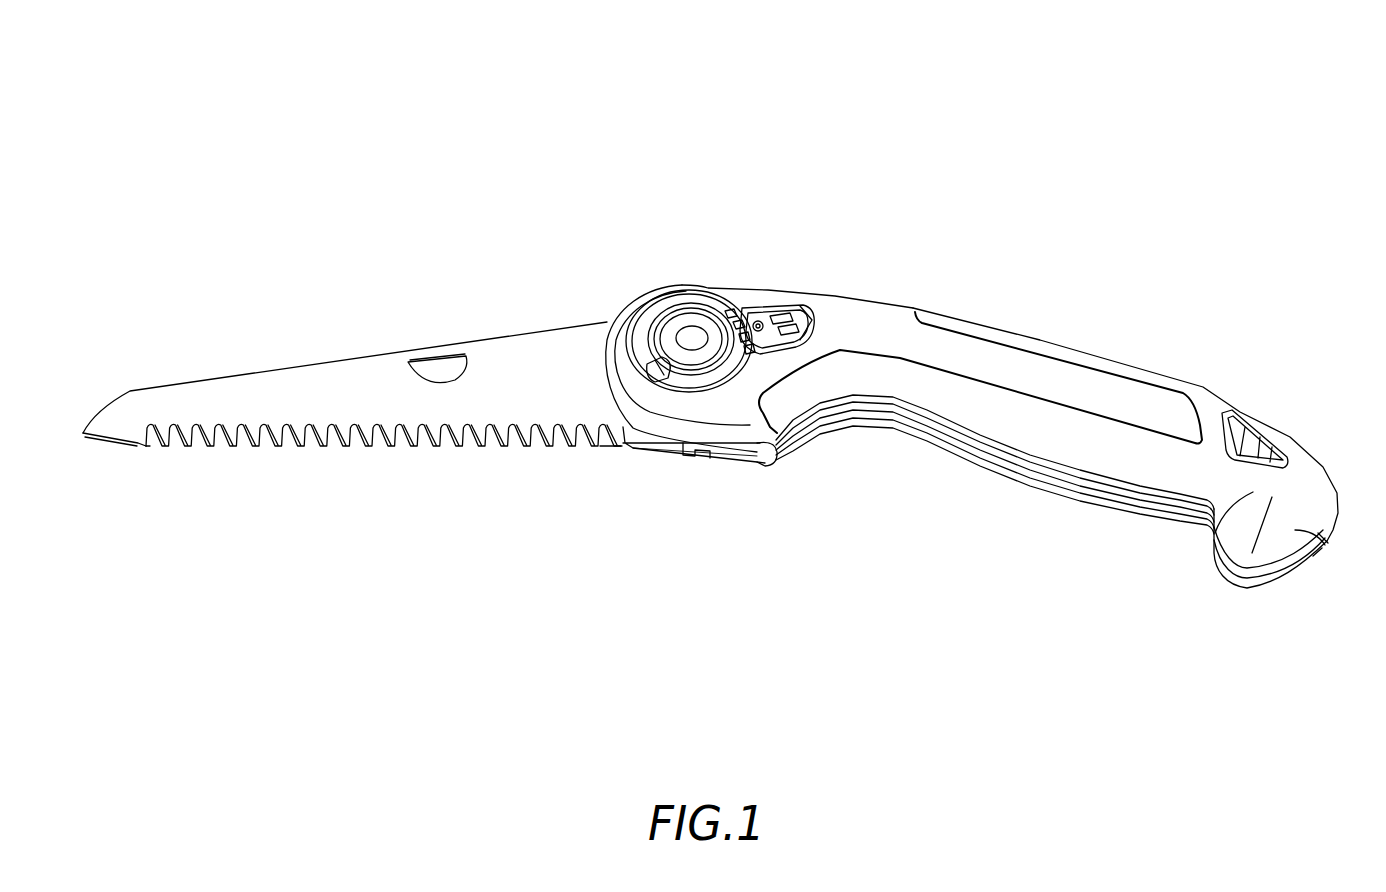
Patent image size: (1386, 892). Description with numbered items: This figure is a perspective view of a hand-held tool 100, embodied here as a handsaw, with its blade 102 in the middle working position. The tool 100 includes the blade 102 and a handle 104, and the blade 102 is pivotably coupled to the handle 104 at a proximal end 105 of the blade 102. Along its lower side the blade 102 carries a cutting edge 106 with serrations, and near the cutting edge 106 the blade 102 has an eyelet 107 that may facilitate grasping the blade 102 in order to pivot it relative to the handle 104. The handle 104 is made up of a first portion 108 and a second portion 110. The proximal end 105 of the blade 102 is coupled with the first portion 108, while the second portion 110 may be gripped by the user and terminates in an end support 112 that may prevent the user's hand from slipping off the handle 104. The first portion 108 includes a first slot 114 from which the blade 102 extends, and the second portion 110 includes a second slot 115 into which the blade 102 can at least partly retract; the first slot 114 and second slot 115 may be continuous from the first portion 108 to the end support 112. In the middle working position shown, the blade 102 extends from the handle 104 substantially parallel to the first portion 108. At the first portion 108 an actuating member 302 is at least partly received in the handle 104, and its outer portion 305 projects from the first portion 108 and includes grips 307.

The hand-held tool 100 is at (1100, 93).
The blade 102 is at (362, 338).
The handle 104 is at (1043, 289).
The proximal end 105 is at (640, 432).
The cutting edge 106 is at (418, 444).
The eyelet 107 is at (442, 372).
The first portion 108 is at (722, 290).
The second portion 110 is at (1133, 370).
The end support 112 is at (1293, 531).
The first slot 114 is at (706, 455).
The second slot 115 is at (1048, 468).
The actuating member 302 is at (777, 299).
The outer portion 305 is at (762, 314).
The grips 307 is at (795, 305).